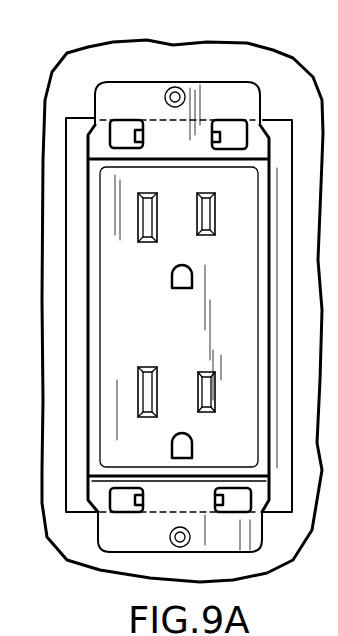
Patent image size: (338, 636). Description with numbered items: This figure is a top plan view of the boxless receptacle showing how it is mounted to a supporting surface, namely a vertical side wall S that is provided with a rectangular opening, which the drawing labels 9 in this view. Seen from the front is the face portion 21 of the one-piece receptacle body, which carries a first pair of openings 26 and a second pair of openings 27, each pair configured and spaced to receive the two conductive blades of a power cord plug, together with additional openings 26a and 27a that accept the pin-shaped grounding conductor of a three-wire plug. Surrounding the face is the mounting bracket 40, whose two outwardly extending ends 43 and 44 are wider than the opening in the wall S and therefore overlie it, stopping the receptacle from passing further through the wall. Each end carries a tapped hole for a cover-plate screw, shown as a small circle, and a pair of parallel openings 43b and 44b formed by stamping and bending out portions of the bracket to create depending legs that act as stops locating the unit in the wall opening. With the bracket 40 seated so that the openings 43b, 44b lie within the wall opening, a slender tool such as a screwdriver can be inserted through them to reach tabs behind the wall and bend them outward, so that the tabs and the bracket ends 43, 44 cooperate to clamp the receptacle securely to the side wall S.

The vertical side wall S is at (287, 545).
The wall box opening 9 is at (288, 258).
The mounting bracket 40 is at (100, 538).
The face portion 21 is at (180, 330).
The outwardly extending end of mounting bracket 44 is at (143, 87).
The opening in mounting bracket end 44b is at (124, 125).
The outwardly extending end of mounting bracket 43 is at (132, 545).
The opening in mounting bracket end 43b is at (220, 493).
The first pair of openings 26 is at (233, 185).
The additional opening 26a is at (195, 268).
The second pair of openings 27 is at (233, 343).
The additional opening 27a is at (193, 443).